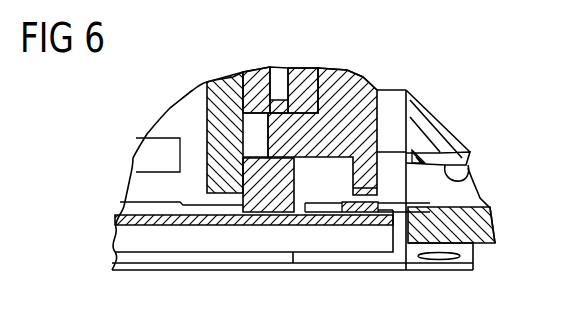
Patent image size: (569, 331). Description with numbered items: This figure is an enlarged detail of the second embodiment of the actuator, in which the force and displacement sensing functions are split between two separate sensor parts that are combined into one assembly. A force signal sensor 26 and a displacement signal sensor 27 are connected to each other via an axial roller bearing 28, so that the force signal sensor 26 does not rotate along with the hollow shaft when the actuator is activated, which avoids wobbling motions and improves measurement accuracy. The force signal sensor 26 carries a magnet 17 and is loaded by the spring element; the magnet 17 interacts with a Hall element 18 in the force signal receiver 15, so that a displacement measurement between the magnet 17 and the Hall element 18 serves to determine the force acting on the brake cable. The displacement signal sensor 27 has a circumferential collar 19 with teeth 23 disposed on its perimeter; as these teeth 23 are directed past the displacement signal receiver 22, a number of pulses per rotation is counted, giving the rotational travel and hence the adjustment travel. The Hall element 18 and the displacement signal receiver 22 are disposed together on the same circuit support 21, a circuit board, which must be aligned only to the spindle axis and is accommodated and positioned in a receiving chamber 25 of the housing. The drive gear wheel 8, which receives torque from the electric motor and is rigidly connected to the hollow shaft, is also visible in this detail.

The drive gear wheel 8 is at (468, 173).
The force signal receiver 15 is at (262, 138).
The magnet 17 is at (272, 147).
The Hall element 18 is at (277, 221).
The circumferential collar 19 is at (377, 145).
The circuit support 21 is at (113, 218).
The displacement signal receiver 22 is at (363, 222).
The teeth 23 is at (377, 194).
The receiving chamber 25 is at (337, 259).
The force signal sensor 26 is at (193, 138).
The displacement signal sensor 27 is at (400, 112).
The axial roller bearing 28 is at (274, 68).